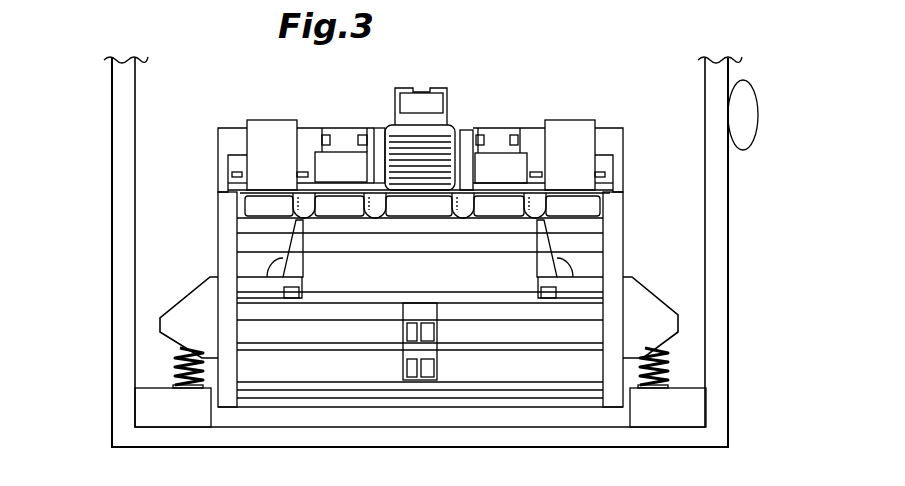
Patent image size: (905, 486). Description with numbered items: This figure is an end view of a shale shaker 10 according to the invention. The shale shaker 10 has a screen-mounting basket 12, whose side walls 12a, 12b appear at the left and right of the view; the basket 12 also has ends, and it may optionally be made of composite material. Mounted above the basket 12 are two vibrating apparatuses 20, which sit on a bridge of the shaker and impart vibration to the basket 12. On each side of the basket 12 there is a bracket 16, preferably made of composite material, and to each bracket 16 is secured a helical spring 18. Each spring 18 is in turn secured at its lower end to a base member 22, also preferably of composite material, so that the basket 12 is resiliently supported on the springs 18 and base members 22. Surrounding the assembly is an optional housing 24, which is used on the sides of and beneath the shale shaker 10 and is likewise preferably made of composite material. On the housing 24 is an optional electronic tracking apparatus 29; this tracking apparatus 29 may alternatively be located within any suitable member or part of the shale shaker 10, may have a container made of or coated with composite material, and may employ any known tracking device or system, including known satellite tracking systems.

The shale shaker 10 is at (630, 148).
The screen-mounting basket 12 is at (217, 193).
The side wall 12a is at (235, 240).
The side wall 12b is at (622, 226).
The bracket 16 is at (147, 318).
The helical spring 18 is at (170, 368).
The vibrating apparatus 20 is at (272, 138).
The base member 22 is at (155, 405).
The housing 24 is at (122, 322).
The electronic tracking apparatus 29 is at (743, 112).